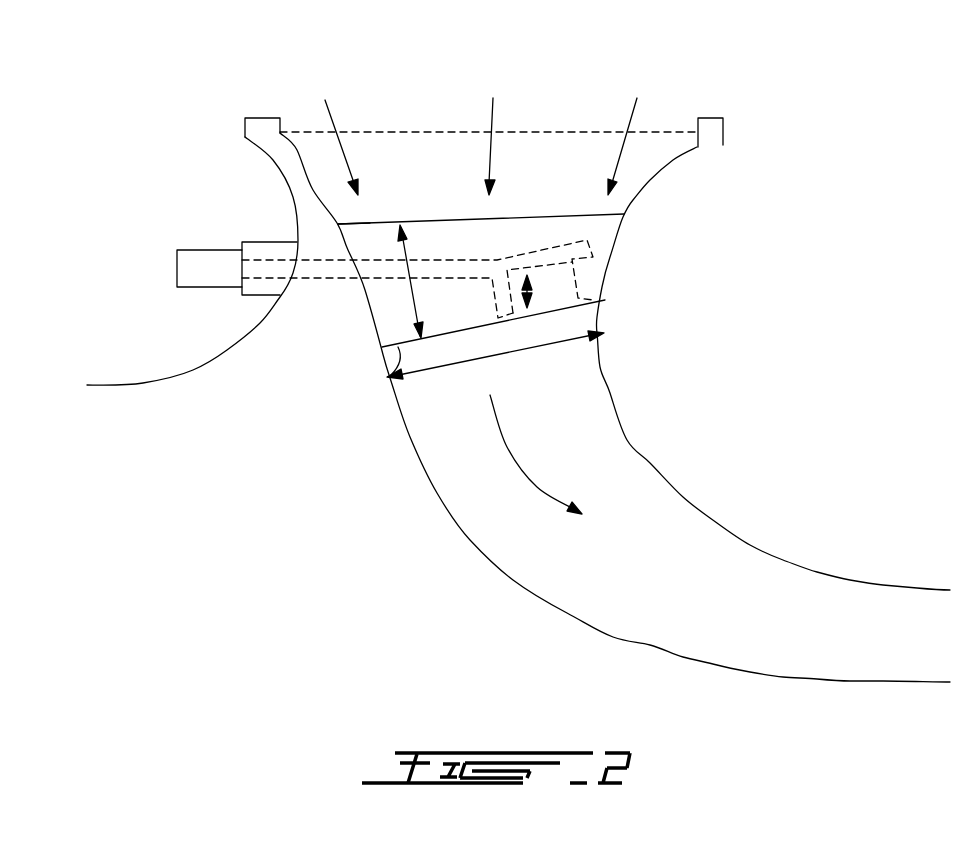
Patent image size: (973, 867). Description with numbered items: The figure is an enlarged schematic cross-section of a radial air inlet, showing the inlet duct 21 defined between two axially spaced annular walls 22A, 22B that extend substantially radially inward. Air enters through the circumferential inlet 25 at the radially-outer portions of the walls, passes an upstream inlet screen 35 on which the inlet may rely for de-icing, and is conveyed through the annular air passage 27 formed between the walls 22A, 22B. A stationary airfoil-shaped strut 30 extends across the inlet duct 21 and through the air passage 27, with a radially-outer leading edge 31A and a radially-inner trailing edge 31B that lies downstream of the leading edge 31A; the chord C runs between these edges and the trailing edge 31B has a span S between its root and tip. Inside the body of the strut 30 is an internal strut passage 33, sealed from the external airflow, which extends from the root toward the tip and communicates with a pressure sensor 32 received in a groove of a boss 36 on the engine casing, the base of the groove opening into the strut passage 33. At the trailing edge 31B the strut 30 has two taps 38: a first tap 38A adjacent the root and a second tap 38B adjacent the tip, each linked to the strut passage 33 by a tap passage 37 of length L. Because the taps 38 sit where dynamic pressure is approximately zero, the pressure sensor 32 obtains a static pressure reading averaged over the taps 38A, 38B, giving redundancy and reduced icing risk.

The inlet duct 21 is at (290, 154).
The inlet 25 is at (426, 160).
The inlet screen 35 is at (555, 132).
The strut 30 is at (603, 224).
The leading edge 31A is at (360, 220).
The trailing edge 31B is at (388, 380).
The pressure sensor 32 is at (197, 250).
The boss 36 is at (258, 288).
The strut passage 33 is at (377, 280).
The tap passage 37 is at (493, 305).
The taps 38 is at (598, 339).
The first tap 38A is at (503, 322).
The second tap 38B is at (597, 306).
The annular wall 22A is at (383, 362).
The annular wall 22B is at (605, 381).
The air passage 27 is at (567, 439).